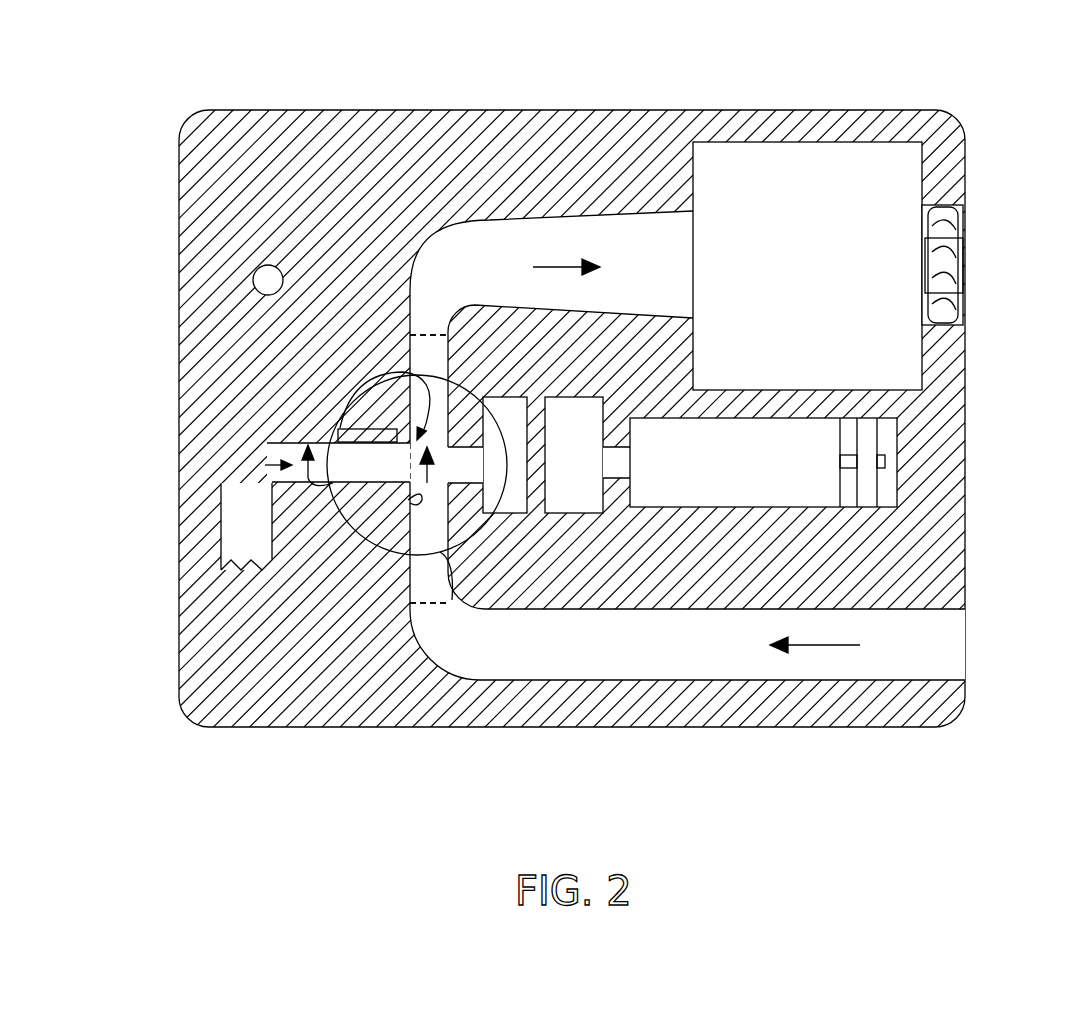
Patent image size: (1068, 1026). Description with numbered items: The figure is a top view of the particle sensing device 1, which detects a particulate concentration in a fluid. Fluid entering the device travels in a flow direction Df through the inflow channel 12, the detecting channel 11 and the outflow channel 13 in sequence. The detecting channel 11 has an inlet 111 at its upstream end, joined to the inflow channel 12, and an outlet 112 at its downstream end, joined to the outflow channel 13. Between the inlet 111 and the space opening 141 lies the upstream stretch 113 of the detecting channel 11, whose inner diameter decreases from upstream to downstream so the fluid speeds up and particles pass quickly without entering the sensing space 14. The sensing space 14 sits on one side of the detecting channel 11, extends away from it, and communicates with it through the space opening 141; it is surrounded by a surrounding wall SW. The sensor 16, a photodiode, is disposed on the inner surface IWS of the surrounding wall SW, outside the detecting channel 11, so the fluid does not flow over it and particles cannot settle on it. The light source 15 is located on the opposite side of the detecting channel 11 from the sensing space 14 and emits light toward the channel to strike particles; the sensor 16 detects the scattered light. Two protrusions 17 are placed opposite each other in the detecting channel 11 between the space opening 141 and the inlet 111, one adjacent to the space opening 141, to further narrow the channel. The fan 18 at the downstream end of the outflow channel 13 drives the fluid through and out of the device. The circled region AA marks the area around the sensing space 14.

The particle sensing device 1 is at (126, 54).
The detecting channel 11 is at (509, 563).
The inlet 111 is at (429, 615).
The outlet 112 is at (432, 335).
The upstream stretch 113 is at (430, 565).
The inflow channel 12 is at (727, 648).
The outflow channel 13 is at (588, 237).
The sensing space 14 is at (300, 463).
The space opening 141 is at (400, 373).
The light source 15 is at (793, 465).
The sensor 16 is at (338, 429).
The protrusions 17 is at (440, 552).
The fan 18 is at (950, 256).
The enlarged region AA is at (417, 373).
The surrounding wall SW is at (265, 444).
The inner surface IWS is at (425, 470).
The flow direction Df is at (552, 262).